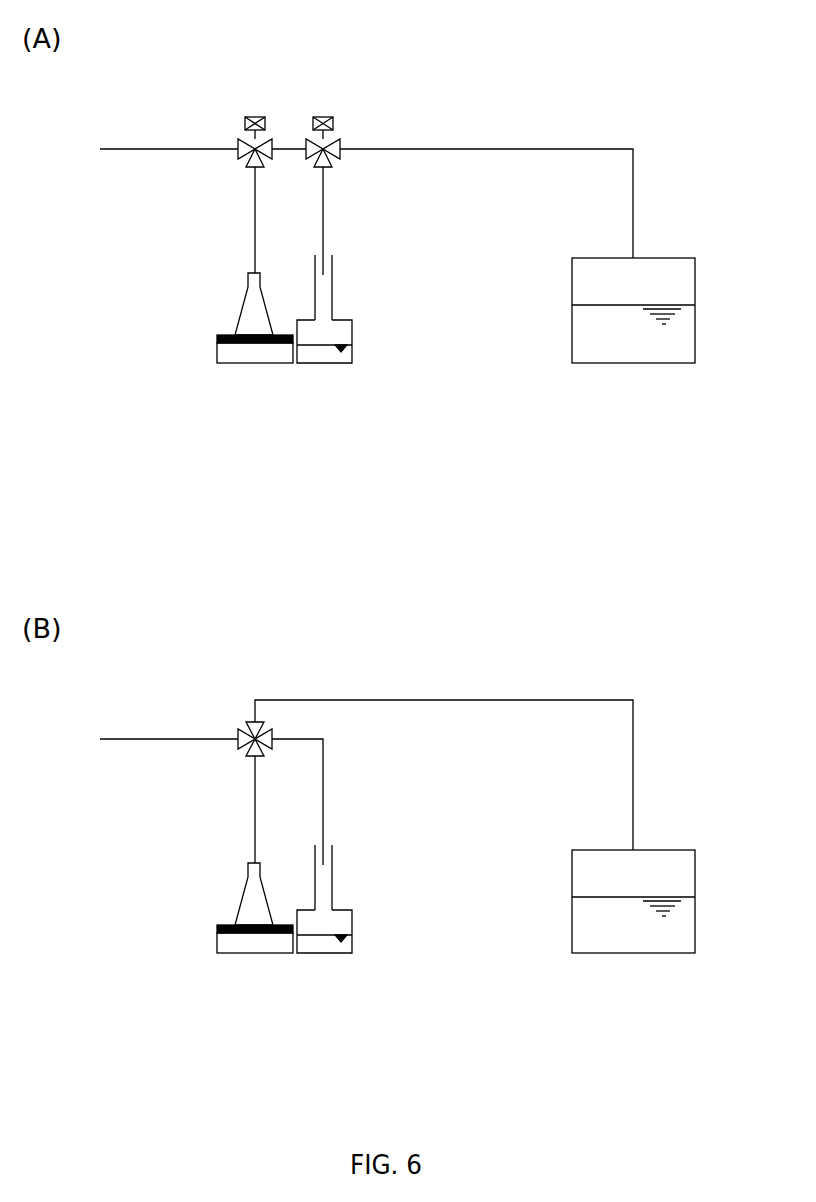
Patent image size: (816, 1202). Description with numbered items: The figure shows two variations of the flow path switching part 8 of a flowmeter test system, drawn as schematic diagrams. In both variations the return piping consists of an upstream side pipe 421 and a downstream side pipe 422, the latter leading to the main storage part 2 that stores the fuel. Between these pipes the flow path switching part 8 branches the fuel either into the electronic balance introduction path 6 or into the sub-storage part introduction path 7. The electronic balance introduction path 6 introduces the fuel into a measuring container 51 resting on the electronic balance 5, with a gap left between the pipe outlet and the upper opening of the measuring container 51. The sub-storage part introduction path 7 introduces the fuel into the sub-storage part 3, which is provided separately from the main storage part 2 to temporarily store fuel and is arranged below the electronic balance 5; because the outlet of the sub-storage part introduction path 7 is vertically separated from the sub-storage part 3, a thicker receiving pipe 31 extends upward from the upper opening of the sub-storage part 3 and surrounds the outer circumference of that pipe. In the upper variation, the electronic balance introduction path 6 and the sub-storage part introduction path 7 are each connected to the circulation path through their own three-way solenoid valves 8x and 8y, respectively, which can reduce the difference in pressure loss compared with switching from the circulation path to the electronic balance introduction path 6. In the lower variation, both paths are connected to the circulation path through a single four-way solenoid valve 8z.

The main storage part 2 is at (696, 309).
The sub-storage part 3 is at (353, 337).
The receiving pipe 31 is at (334, 289).
The electronic balance 5 is at (216, 352).
The measuring container 51 is at (239, 305).
The electronic balance introduction path 6 is at (252, 207).
The sub-storage part introduction path 7 is at (327, 207).
The flow path switching part 8 is at (330, 60).
The three-way solenoid valve 8x is at (256, 115).
The three-way solenoid valve 8y is at (323, 115).
The four-way solenoid valve 8z is at (248, 723).
The upstream side pipe 421 is at (171, 146).
The downstream side pipe 422 is at (461, 146).